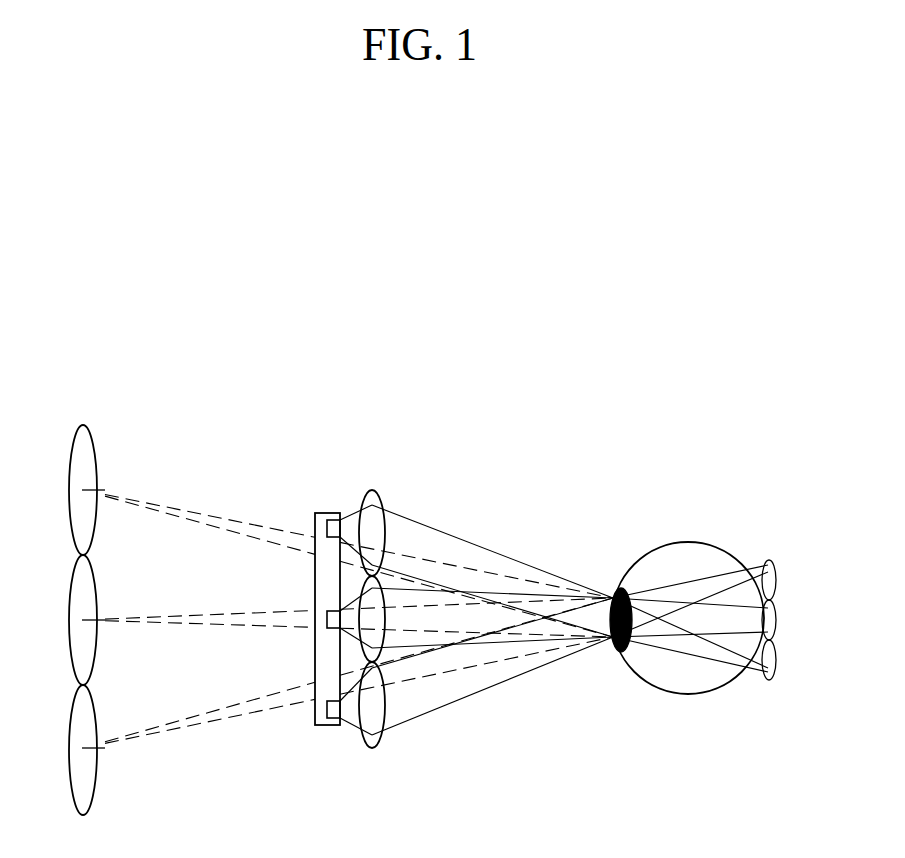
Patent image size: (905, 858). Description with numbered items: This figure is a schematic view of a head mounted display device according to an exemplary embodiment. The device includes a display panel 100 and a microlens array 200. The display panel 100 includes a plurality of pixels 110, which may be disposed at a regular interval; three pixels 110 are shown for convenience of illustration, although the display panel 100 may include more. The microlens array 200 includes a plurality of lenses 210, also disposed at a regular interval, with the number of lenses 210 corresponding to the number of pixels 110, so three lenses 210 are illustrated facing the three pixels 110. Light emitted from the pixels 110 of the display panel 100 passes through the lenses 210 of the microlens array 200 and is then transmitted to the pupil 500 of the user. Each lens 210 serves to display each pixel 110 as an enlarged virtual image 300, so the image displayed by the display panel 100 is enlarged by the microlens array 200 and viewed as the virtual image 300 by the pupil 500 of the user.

The display panel 100 is at (318, 513).
The pixel 110 is at (333, 520).
The microlens array 200 is at (371, 478).
The lens 210 is at (377, 528).
The virtual image 300 is at (96, 452).
The pupil 500 is at (611, 616).